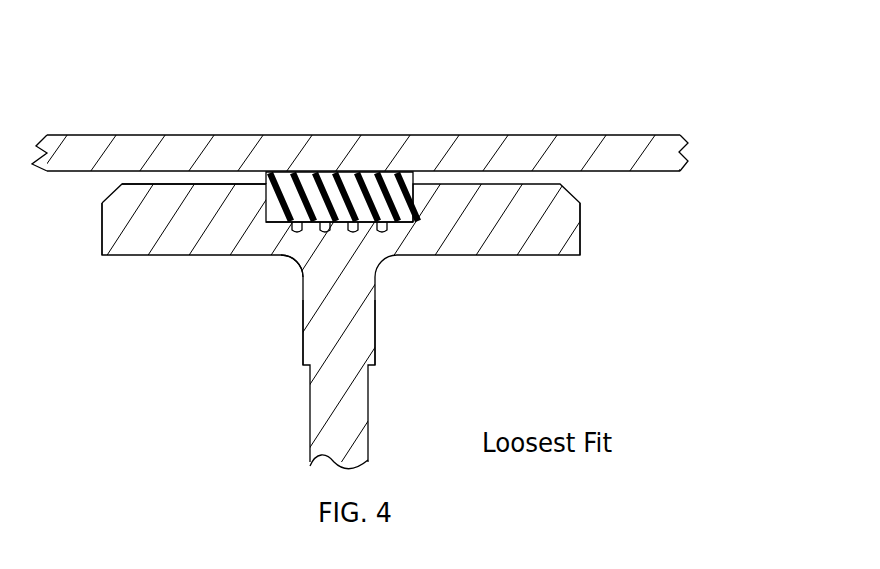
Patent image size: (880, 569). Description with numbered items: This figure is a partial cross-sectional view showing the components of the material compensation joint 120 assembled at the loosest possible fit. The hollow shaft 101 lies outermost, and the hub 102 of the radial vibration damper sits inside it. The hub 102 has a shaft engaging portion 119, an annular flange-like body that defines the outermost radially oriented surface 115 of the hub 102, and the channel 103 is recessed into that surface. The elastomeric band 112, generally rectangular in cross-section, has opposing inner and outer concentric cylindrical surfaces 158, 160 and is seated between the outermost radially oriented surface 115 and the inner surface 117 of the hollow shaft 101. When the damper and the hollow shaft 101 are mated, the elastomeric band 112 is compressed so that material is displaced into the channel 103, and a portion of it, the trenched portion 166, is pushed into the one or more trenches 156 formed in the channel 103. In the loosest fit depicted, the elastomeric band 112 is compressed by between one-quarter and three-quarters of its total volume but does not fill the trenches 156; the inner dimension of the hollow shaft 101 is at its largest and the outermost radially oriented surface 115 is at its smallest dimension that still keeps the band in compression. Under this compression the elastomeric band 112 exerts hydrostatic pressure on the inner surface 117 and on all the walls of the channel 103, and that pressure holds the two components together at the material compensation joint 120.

The hollow shaft 101 is at (638, 144).
The hub 102 is at (365, 381).
The channel 103 is at (413, 190).
The elastomeric band 112 is at (357, 178).
The outermost radially oriented surface 115 is at (153, 186).
The inner surface 117 is at (640, 170).
The shaft engaging portion 119 is at (133, 245).
The material compensation joint 120 is at (428, 182).
The trench 156 is at (355, 218).
The inner concentric cylindrical surface 158 is at (290, 226).
The outer concentric cylindrical surface 160 is at (403, 173).
The trenched portion 166 is at (298, 222).